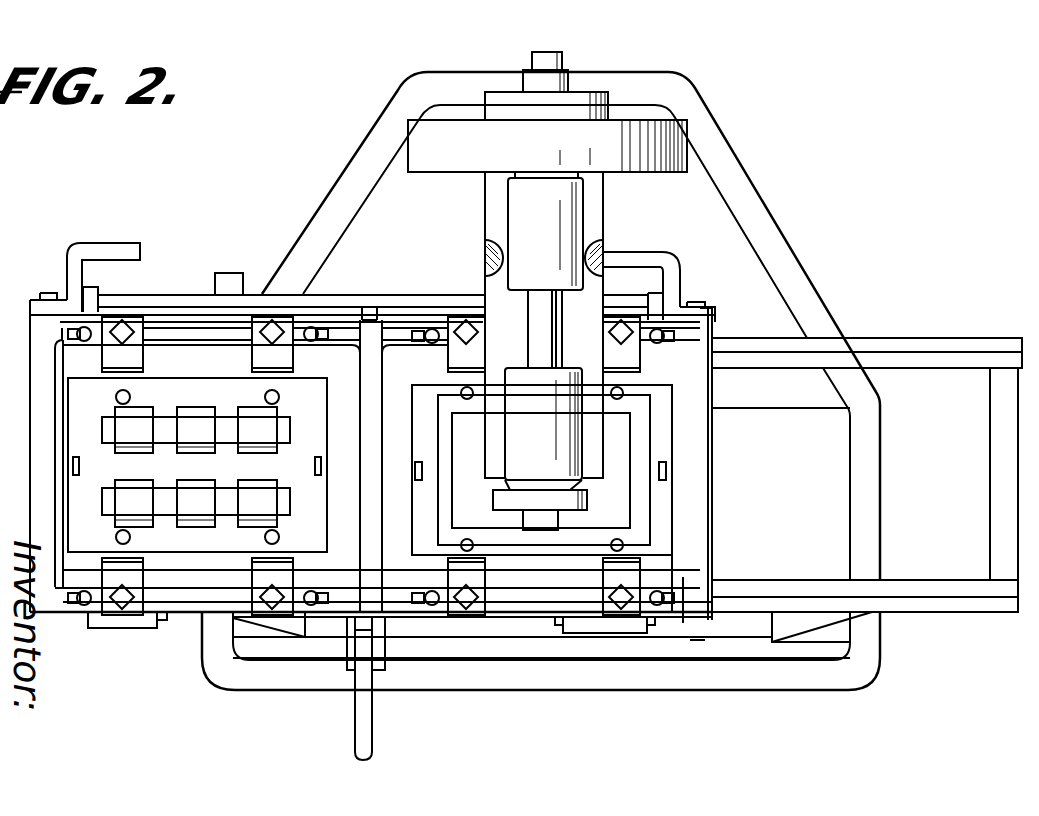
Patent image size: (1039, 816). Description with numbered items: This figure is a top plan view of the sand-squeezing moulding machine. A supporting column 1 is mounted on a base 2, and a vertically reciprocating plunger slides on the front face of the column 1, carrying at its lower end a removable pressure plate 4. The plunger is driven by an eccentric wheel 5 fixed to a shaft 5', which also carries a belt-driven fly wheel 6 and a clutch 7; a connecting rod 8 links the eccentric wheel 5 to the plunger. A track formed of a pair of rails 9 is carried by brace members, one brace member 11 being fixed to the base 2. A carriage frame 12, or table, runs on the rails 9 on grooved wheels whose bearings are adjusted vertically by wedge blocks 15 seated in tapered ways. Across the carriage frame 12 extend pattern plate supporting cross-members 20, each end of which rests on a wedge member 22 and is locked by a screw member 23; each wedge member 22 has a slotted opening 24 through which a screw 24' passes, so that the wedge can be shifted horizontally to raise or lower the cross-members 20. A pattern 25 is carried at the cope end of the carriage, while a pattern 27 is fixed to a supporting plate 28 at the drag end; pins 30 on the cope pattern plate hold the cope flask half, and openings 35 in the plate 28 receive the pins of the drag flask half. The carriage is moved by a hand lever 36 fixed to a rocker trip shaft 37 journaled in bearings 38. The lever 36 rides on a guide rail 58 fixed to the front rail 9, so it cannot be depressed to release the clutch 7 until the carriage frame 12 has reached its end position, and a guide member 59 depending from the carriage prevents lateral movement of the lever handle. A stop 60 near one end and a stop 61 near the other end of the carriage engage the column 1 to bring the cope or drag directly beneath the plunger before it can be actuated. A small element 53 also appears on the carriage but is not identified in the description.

The supporting column 1 is at (610, 248).
The base 2 is at (781, 462).
The pressure plate 4 is at (630, 426).
The eccentric wheel 5 is at (552, 510).
The shaft 5' is at (540, 270).
The fly wheel 6 is at (547, 146).
The clutch 7 is at (577, 110).
The connecting rod 8 is at (536, 520).
The rails 9 is at (955, 352).
The supporting brace member 11 is at (265, 628).
The carriage frame 12 is at (712, 505).
The wedge blocks 15 is at (162, 624).
The pattern plate supporting cross-members 20 is at (262, 376).
The wedge member 22 is at (240, 333).
The screw member 23 is at (371, 466).
The slotted opening 24 is at (338, 478).
The screw 24' is at (376, 494).
The pattern 25 is at (186, 462).
The pattern 27 is at (88, 428).
The supporting plate 28 is at (672, 532).
The pins 30 is at (76, 476).
The openings 35 is at (414, 472).
The lever 36 is at (352, 297).
The rocker trip shaft 37 is at (402, 297).
The bearings 38 is at (72, 288).
The lug 53 is at (228, 278).
The guide rail 58 is at (588, 647).
The guide member 59 is at (385, 662).
The stop 60 is at (645, 262).
The stop 61 is at (113, 258).